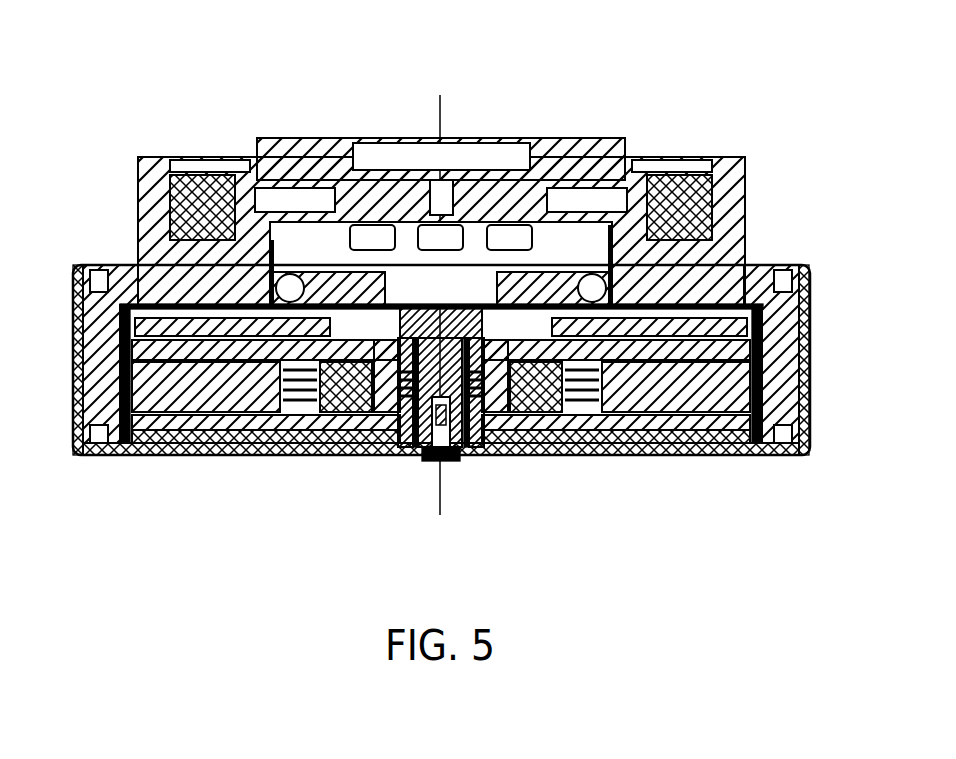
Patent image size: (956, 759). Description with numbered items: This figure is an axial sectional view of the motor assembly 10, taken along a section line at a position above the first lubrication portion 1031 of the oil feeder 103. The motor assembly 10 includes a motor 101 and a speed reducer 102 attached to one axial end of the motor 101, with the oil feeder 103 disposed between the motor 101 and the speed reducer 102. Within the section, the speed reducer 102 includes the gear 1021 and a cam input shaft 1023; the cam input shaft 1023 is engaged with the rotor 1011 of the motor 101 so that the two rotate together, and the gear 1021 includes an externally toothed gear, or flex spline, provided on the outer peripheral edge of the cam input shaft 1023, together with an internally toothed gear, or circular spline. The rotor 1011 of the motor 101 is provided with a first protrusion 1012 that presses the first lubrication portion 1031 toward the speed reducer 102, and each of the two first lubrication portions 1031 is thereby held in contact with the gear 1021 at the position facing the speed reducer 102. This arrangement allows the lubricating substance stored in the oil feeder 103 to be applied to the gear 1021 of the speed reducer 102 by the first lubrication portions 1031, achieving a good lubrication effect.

The motor assembly 10 is at (138, 61).
The motor 101 is at (818, 310).
The speed reducer 102 is at (818, 145).
The oil feeder 103 is at (133, 208).
The rotor 1011 is at (130, 308).
The first protrusion 1012 is at (250, 457).
The gear 1021 is at (228, 160).
The cam input shaft 1023 is at (337, 260).
The first lubrication portion 1031 is at (137, 457).